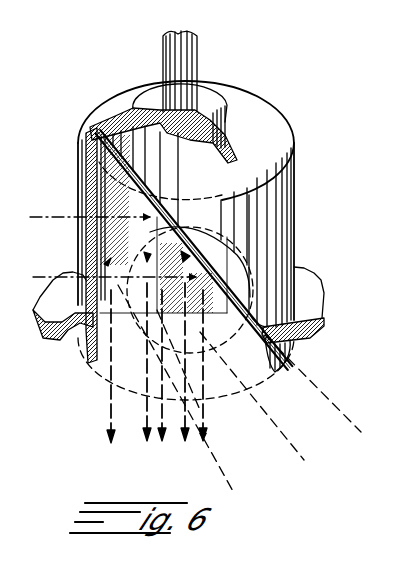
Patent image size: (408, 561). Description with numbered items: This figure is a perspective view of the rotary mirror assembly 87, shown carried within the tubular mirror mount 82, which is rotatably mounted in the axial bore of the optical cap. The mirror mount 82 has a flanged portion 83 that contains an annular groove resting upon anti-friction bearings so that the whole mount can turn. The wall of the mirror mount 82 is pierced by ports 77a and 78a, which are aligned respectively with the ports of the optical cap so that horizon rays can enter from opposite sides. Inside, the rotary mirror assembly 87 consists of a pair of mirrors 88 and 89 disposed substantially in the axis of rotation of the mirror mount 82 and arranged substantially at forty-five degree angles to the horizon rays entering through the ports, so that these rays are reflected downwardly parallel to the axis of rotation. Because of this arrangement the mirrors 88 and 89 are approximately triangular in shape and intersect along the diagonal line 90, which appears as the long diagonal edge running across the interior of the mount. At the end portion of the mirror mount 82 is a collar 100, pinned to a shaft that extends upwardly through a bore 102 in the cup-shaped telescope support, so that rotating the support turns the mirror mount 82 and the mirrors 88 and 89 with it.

The bore 102 is at (190, 55).
The rotary mirror assembly 87 is at (196, 108).
The collar 100 is at (216, 107).
The diagonal line 90 is at (195, 215).
The port 77a is at (77, 205).
The mirror 88 is at (117, 237).
The port 78a is at (237, 253).
The tubular mirror mount 82 is at (281, 260).
The flanged portion 83 is at (314, 300).
The mirror 89 is at (287, 348).